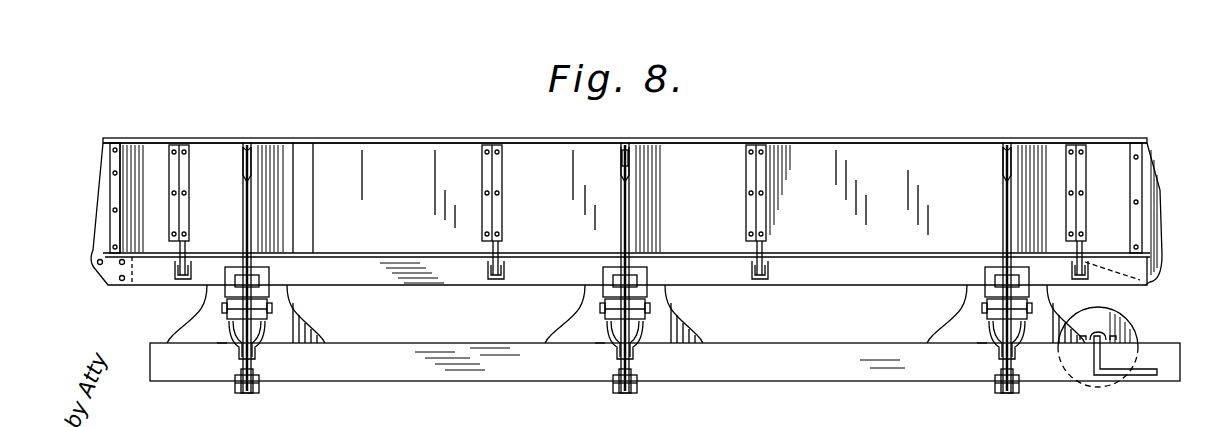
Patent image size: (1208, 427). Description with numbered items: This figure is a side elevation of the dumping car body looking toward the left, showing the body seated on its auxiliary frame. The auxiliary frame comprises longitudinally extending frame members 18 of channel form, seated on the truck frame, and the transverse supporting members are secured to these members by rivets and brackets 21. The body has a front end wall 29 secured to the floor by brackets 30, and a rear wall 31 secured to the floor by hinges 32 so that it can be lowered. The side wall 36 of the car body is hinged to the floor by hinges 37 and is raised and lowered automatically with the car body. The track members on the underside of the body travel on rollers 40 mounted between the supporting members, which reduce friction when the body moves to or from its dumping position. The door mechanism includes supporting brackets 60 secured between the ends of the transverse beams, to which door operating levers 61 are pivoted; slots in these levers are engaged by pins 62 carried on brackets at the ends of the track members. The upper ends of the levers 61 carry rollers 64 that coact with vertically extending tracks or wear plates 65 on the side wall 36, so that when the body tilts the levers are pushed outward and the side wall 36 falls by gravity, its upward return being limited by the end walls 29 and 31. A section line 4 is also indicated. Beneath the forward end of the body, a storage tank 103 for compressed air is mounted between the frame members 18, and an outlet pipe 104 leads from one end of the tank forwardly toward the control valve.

The section line 4 is at (240, 136).
The longitudinally extending frame member 18 is at (430, 375).
The bracket 21 is at (182, 342).
The front end wall 29 is at (1145, 141).
The bracket 30 is at (1160, 188).
The rear wall 31 is at (112, 165).
The hinge 32 is at (100, 198).
The side wall 36 is at (372, 158).
The hinge 37 is at (187, 200).
The roller 40 is at (600, 306).
The supporting bracket 60 is at (250, 396).
The door operating lever 61 is at (252, 229).
The pin 62 is at (648, 280).
The roller 64 is at (630, 158).
The track or wear plate 65 is at (633, 148).
The storage tank 103 is at (1130, 320).
The outlet pipe 104 is at (1136, 376).